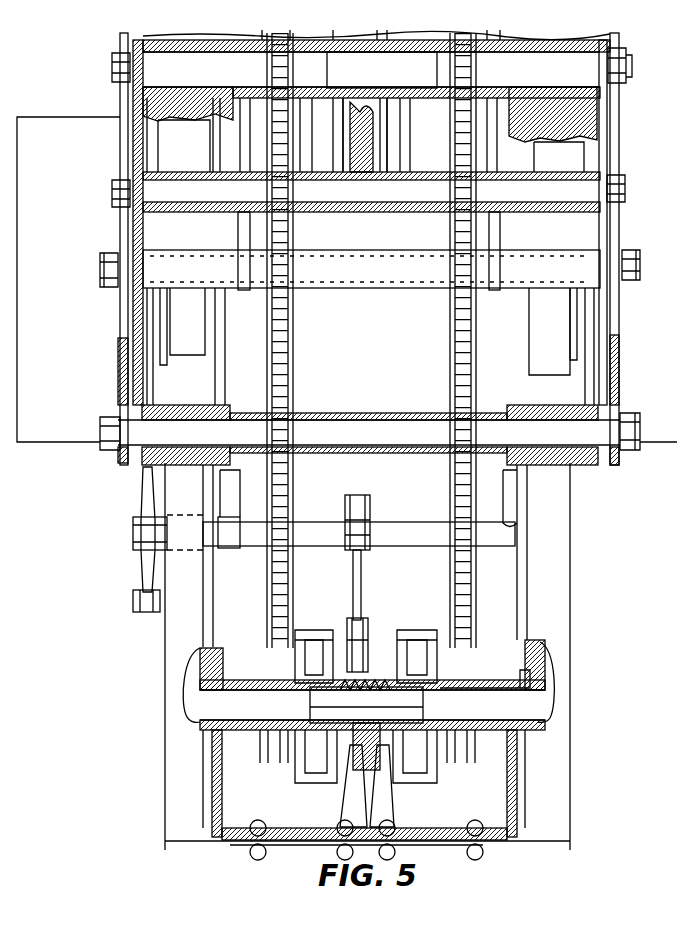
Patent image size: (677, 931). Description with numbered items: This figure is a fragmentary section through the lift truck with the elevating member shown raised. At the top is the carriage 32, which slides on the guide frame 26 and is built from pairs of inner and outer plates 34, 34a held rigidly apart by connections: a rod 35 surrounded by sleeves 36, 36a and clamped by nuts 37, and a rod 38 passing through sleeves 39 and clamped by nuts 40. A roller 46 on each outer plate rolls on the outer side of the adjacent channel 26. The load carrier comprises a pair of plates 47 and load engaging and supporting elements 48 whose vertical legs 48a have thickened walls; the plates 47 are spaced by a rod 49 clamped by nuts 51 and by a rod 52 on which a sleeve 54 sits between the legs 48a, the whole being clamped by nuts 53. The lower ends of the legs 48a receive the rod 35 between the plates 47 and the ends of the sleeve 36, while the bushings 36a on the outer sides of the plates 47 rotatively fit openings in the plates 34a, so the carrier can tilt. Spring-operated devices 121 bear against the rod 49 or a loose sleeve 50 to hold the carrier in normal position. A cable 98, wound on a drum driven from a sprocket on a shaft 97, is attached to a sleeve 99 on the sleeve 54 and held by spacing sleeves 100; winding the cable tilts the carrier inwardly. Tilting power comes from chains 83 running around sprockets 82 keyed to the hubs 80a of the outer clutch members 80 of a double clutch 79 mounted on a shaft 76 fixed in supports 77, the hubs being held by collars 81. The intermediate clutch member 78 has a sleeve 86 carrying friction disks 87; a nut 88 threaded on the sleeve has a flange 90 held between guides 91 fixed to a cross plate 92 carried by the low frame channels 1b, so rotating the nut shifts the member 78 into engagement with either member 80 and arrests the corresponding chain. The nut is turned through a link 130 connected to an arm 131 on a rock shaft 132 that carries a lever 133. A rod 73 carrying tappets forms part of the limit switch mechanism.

The low frame portion 1b is at (364, 783).
The guide frame 26 is at (572, 545).
The carriage 32 is at (631, 370).
The inner plates 34 is at (240, 222).
The outer plates 34a is at (122, 148).
The rod 35 is at (403, 428).
The sleeve 36 is at (310, 416).
The sleeve or bushing 36a is at (615, 410).
The nuts 37 is at (110, 450).
The rod 38 is at (640, 257).
The sleeves 39 is at (172, 252).
The nuts 40 is at (108, 288).
The roller 46 is at (218, 358).
The plates 47 is at (150, 395).
The load engaging and supporting elements 48 is at (213, 400).
The vertical legs 48a is at (160, 110).
The rod 49 is at (418, 180).
The sleeve 50 is at (445, 172).
The nuts 51 is at (118, 200).
The rod 52 is at (602, 50).
The nuts 53 is at (630, 75).
The sleeve 54 is at (462, 98).
The rod 73 is at (225, 345).
The shaft 76 is at (552, 708).
The supports 77 is at (545, 675).
The intermediate clutch member 78 is at (398, 693).
The double clutch 79 is at (366, 619).
The outer clutch members 80 is at (303, 635).
The hub 80a is at (480, 688).
The collar 81 is at (313, 683).
The sprocket 82 is at (275, 762).
The chains 83 is at (292, 345).
The sleeve 86 is at (343, 705).
The disks 87 is at (344, 640).
The nut 88 is at (392, 768).
The flange 90 is at (385, 780).
The guides 91 is at (350, 770).
The cross plate 92 is at (417, 845).
The shaft 97 is at (345, 132).
The cable 98 is at (372, 138).
The sleeve 99 is at (388, 100).
The spacing sleeves 100 is at (490, 100).
The spring-operated devices 121 is at (135, 168).
The link 130 is at (362, 578).
The arm 131 is at (362, 495).
The rock shaft 132 is at (425, 522).
The lever 133 is at (140, 570).